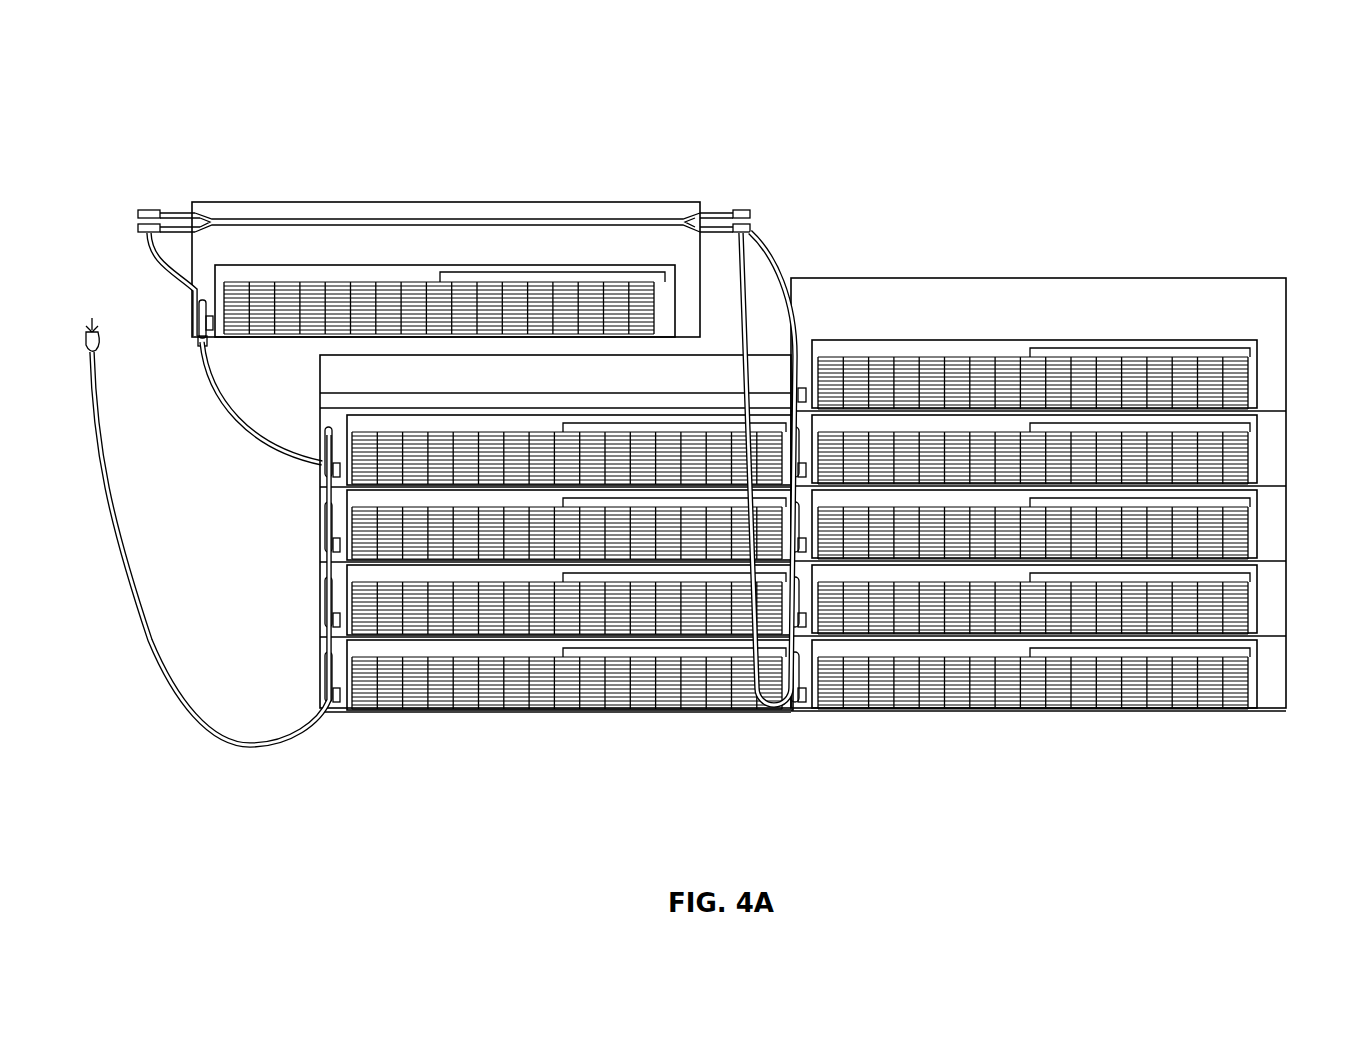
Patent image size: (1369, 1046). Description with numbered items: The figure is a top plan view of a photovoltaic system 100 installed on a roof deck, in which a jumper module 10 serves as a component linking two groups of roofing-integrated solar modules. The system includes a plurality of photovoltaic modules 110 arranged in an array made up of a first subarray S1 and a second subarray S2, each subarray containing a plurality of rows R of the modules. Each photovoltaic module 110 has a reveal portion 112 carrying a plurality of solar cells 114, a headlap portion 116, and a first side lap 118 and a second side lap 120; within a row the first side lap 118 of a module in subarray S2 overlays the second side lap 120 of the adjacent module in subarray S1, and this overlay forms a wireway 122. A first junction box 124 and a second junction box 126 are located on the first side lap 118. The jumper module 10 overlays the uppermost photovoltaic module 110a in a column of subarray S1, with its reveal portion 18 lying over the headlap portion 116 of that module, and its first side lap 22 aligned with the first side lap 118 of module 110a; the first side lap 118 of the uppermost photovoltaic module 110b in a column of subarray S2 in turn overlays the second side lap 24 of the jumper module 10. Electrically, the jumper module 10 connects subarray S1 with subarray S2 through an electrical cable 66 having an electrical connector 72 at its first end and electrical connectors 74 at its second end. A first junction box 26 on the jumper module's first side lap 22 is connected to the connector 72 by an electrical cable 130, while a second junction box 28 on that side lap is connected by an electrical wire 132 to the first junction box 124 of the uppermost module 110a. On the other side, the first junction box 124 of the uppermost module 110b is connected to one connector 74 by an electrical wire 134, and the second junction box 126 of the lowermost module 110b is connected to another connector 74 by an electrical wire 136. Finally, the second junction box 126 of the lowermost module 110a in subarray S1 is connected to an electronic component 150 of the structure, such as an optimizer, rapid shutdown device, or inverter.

The photovoltaic system 100 is at (1262, 128).
The jumper module 10 is at (276, 186).
The reveal portion 18 is at (430, 300).
The first side lap 22 is at (203, 322).
The second side lap 24 is at (682, 295).
The first junction box 26 is at (202, 342).
The second junction box 28 is at (198, 303).
The electrical cable 66 is at (362, 218).
The electrical connector 72 is at (148, 210).
The electrical connector 74 is at (740, 210).
The photovoltaic module 110 is at (804, 446).
The photovoltaic module 110a is at (516, 446).
The photovoltaic module 110b is at (1079, 463).
The reveal portion 112 is at (525, 622).
The solar cells 114 is at (432, 615).
The headlap portion 116 is at (585, 370).
The first side lap 118 is at (320, 461).
The second side lap 120 is at (1272, 382).
The wireway 122 is at (824, 470).
The first junction box 124 is at (332, 498).
The second junction box 126 is at (322, 432).
The electrical cable 130 is at (150, 248).
The electrical wire 132 is at (335, 478).
The electrical wire 134 is at (775, 285).
The electrical wire 136 is at (183, 722).
The electronic component 150 is at (86, 352).
The first subarray S1 is at (724, 300).
The second subarray S2 is at (1145, 266).
The rows R is at (1320, 318).